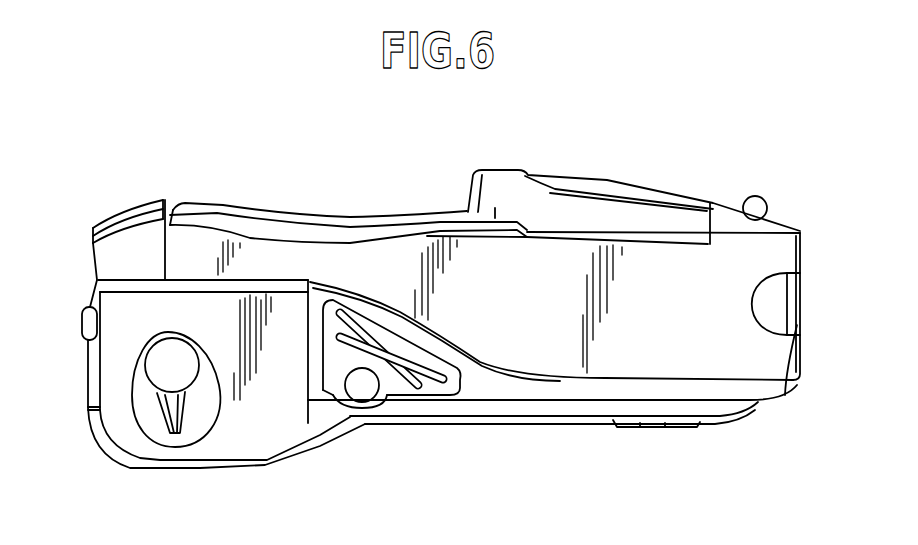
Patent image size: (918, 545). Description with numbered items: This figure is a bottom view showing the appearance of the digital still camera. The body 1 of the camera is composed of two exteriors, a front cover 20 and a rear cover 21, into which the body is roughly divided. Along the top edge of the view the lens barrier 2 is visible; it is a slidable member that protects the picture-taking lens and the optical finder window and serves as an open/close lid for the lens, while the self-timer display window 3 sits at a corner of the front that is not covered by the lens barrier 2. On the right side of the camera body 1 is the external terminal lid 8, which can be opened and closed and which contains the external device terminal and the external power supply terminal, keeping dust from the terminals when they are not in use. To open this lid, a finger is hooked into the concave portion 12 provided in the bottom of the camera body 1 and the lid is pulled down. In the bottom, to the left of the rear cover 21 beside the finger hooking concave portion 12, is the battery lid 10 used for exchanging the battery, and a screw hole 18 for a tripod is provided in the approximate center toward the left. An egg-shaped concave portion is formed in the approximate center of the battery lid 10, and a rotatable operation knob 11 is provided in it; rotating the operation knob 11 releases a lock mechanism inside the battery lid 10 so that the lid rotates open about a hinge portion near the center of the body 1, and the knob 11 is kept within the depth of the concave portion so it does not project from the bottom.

The body 1 is at (286, 201).
The lens barrier 2 is at (495, 176).
The self-timer display window 3 is at (753, 196).
The external terminal lid 8 is at (785, 395).
The battery lid 10 is at (245, 425).
The operation knob 11 is at (152, 377).
The concave portion 12 is at (772, 325).
The screw hole 18 is at (362, 404).
The front cover 20 is at (95, 257).
The rear cover 21 is at (100, 435).